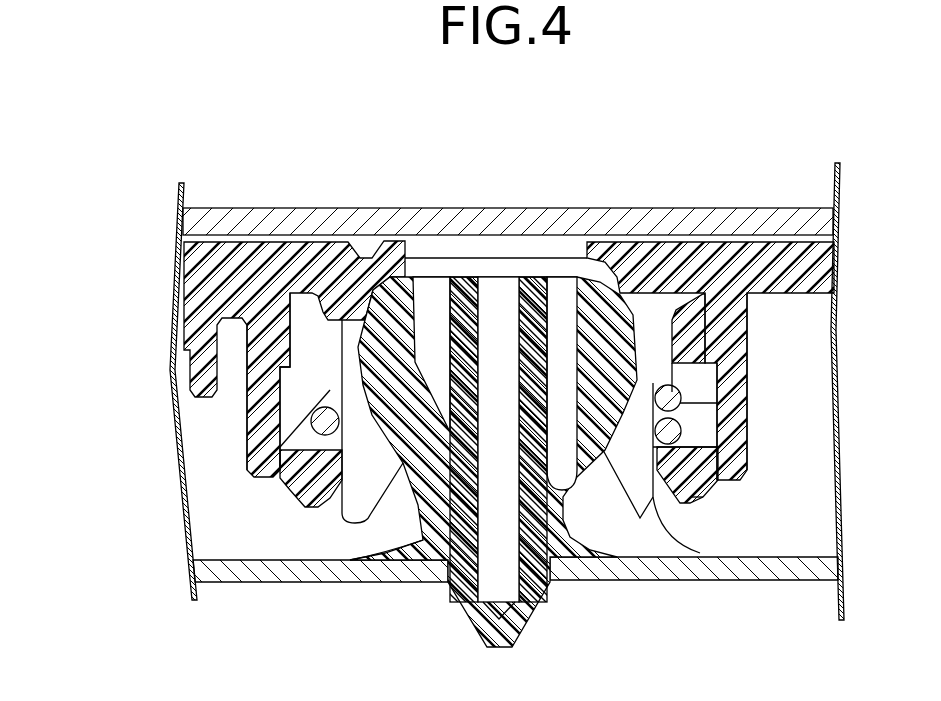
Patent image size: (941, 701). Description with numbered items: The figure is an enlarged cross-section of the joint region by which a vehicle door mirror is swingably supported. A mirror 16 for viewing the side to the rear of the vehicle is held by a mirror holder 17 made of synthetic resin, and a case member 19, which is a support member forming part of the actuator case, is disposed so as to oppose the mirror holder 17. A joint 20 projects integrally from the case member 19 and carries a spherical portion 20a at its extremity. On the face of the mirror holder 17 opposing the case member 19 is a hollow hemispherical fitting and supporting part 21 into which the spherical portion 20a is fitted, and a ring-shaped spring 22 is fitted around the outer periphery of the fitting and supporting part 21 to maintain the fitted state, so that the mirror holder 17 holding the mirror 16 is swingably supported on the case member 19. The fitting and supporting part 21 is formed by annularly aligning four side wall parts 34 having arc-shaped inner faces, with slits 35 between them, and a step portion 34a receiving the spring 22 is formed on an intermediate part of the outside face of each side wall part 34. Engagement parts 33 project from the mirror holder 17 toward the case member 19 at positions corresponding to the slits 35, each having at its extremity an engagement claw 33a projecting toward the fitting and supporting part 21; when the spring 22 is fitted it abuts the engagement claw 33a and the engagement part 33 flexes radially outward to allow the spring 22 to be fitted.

The mirror 16 is at (670, 235).
The mirror holder 17 is at (793, 293).
The case member 19 is at (803, 553).
The joint 20 is at (578, 485).
The spherical portion 20a is at (583, 282).
The fitting and supporting part 21 is at (660, 520).
The spring 22 is at (680, 403).
The engagement part 33 is at (253, 410).
The engagement claw 33a is at (347, 542).
The side wall part 34 is at (290, 313).
The step portion 34a is at (303, 480).
The slit 35 is at (257, 452).